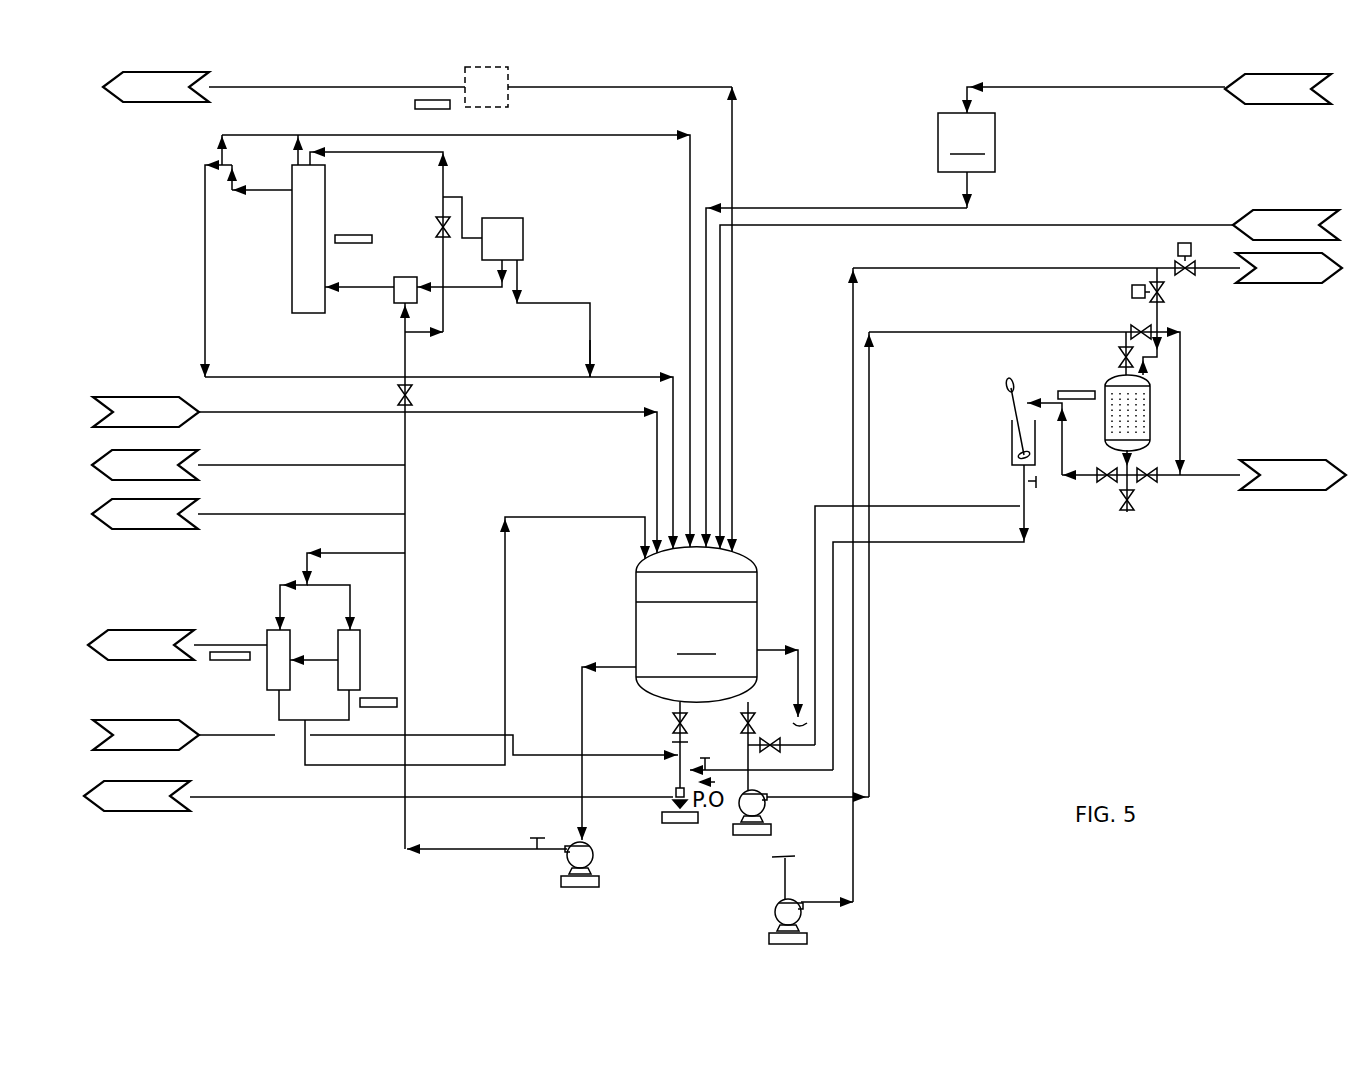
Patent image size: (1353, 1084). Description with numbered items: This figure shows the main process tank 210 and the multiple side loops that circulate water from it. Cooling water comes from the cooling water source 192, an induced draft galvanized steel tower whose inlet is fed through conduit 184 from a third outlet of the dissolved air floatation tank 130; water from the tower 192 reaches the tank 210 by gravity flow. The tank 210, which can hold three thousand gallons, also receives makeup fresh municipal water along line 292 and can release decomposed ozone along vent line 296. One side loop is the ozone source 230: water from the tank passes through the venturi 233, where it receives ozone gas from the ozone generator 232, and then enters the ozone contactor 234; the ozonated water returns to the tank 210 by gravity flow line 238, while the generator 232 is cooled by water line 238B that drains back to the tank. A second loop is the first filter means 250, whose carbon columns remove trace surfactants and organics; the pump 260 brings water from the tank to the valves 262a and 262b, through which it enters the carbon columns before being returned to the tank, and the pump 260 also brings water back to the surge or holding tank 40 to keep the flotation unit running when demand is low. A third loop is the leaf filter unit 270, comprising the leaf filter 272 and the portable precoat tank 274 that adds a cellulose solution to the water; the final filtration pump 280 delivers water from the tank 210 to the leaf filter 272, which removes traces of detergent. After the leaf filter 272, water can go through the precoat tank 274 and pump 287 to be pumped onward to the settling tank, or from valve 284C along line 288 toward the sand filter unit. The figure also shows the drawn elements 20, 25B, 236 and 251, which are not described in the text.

The line 20 is at (489, 839).
The pump 25B is at (578, 823).
The holding tank 40 is at (1293, 496).
The dissolved air floatation tank 130 is at (1310, 104).
The conduit 184 is at (1152, 90).
The cooling water source 192 is at (966, 160).
The main process tank 210 is at (696, 624).
The ozone source 230 is at (385, 492).
The ozone generator 232 is at (496, 218).
The venturi 233 is at (393, 303).
The ozone contactor 234 is at (292, 256).
The line 236 is at (545, 135).
The gravity flow line 238 is at (497, 378).
The water line 238B is at (592, 354).
The first filter means 250 is at (378, 791).
The line 251 is at (555, 721).
The pump 260 is at (491, 641).
The valve 262a is at (305, 619).
The valve 262b is at (325, 637).
The leaf filter unit 270 is at (1145, 489).
The leaf filter 272 is at (1140, 416).
The precoat tank 274 is at (1010, 439).
The final filtration pump 280 is at (1062, 463).
The valve 284C is at (1108, 483).
The pump 287 is at (677, 790).
The line 288 is at (1151, 463).
The line 292 is at (568, 412).
The vent line 296 is at (736, 160).